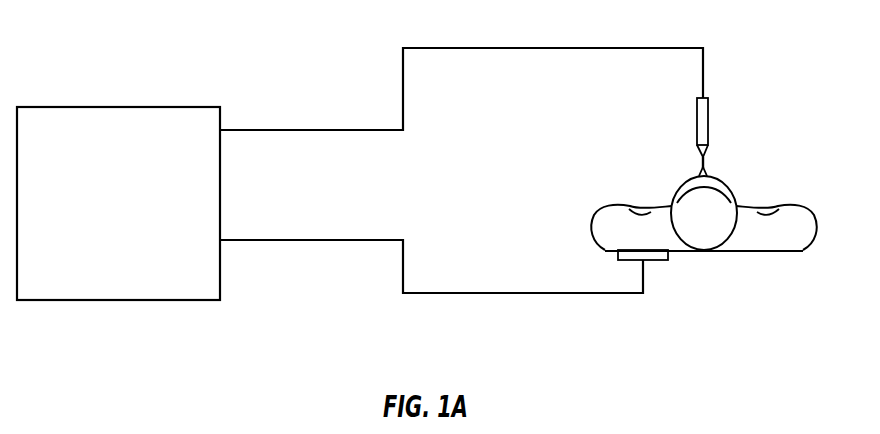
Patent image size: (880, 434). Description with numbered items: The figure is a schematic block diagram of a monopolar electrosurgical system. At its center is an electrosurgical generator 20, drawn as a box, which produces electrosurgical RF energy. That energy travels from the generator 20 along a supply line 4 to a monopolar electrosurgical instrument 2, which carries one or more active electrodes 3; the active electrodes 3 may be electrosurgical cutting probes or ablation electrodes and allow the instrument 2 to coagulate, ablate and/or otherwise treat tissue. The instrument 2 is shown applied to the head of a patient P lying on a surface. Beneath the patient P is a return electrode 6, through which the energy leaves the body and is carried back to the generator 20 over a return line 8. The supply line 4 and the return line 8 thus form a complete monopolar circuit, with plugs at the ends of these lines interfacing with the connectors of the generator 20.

The electrosurgical generator 20 is at (118, 106).
The supply line / active cable 4 is at (551, 47).
The return line / return cable 8 is at (552, 294).
The electrosurgical instrument (monopolar) 2 is at (697, 120).
The active electrode 3 is at (709, 152).
The return electrode / return pad 6 is at (655, 262).
The patient P is at (777, 176).